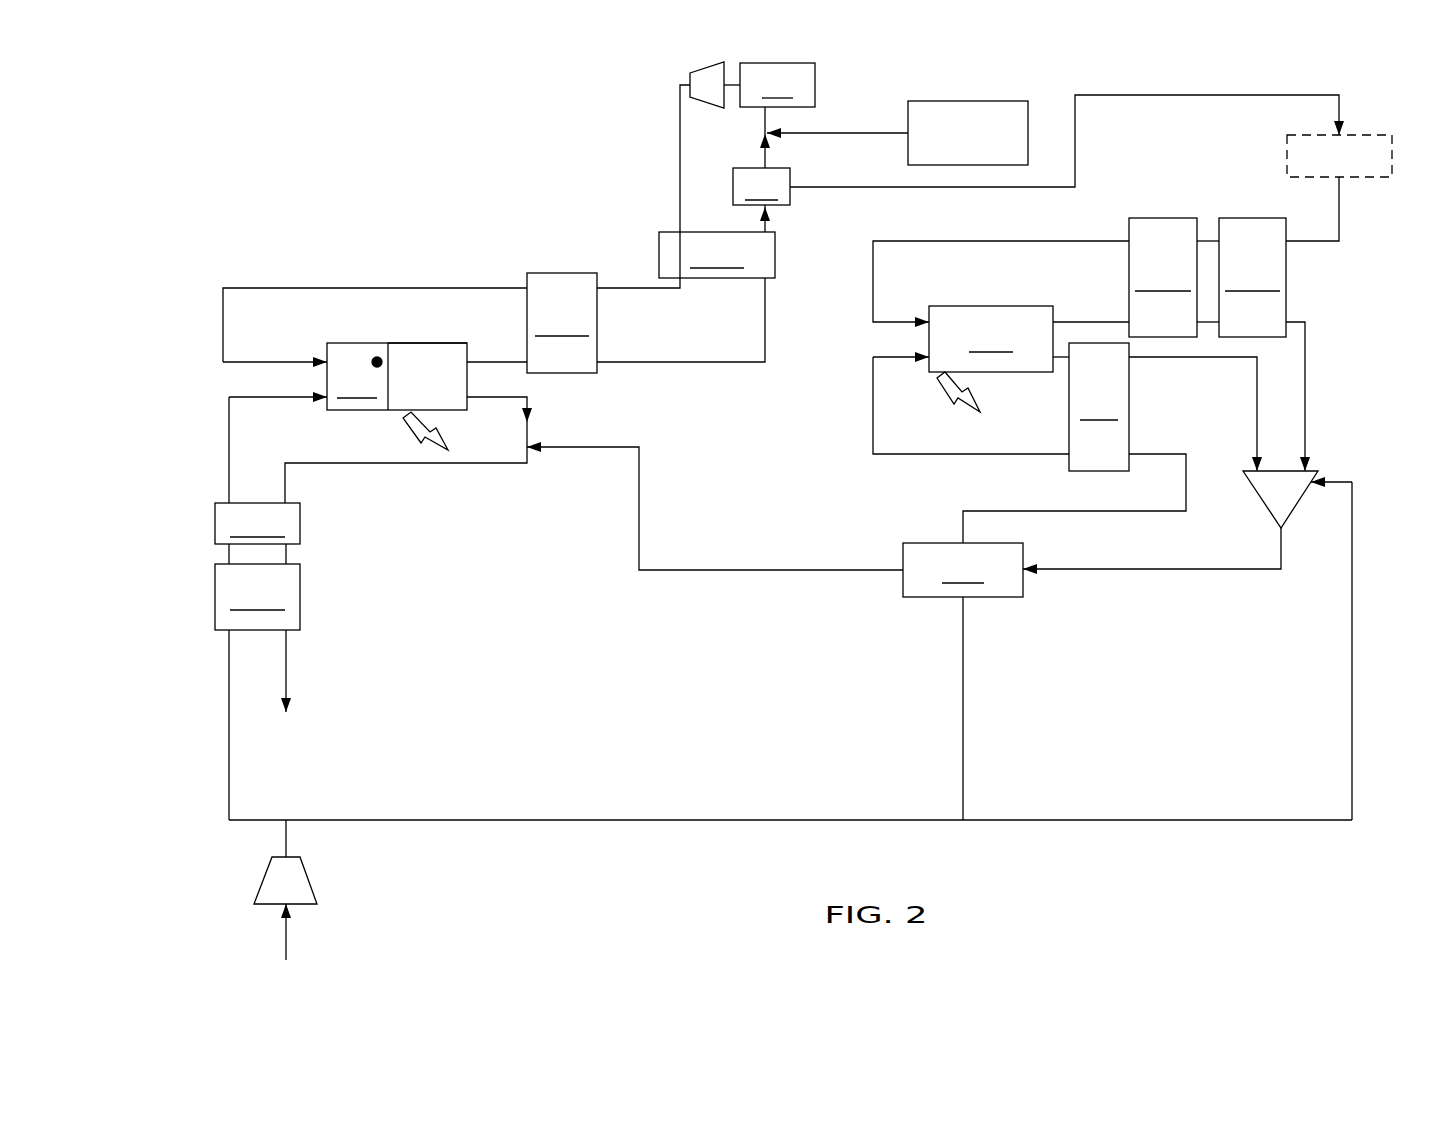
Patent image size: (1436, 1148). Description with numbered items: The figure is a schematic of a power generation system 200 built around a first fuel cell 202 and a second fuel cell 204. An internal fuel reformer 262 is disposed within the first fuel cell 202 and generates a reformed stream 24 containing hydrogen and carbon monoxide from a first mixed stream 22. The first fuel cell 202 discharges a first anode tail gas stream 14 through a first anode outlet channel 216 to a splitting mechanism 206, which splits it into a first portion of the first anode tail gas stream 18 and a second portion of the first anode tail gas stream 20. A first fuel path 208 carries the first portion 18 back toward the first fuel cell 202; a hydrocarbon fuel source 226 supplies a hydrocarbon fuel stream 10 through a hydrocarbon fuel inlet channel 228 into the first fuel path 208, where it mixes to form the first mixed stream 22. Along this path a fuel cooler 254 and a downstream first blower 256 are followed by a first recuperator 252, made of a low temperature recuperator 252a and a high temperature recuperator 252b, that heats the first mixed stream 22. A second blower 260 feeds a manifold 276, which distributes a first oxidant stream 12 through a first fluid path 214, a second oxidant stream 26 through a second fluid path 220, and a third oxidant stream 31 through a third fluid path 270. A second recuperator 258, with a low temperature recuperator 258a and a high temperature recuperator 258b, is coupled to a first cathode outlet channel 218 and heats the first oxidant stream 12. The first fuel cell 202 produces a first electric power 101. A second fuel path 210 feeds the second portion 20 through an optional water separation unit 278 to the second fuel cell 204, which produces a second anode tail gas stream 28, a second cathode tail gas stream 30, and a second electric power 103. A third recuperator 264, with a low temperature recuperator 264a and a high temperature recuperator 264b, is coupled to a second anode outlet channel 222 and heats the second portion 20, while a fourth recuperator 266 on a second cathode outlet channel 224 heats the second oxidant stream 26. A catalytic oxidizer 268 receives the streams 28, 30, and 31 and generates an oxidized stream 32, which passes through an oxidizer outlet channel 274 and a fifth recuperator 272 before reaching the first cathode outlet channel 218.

The power generation system 200 is at (296, 140).
The hydrocarbon fuel stream 10 is at (775, 130).
The first oxidant stream 12 is at (320, 400).
The first anode tail gas stream 14 is at (770, 210).
The first portion of the first anode tail gas stream 18 is at (762, 150).
The second portion of the first anode tail gas stream 20 is at (922, 320).
The first mixed stream 22 is at (320, 358).
The reformed stream 24 is at (372, 356).
The second oxidant stream 26 is at (922, 360).
The second anode tail gas stream 28 is at (1310, 463).
The second cathode tail gas stream 30 is at (1250, 463).
The third oxidant stream 31 is at (1318, 488).
The oxidized stream 32 is at (1030, 575).
The first electric power 101 is at (450, 437).
The second electric power 103 is at (980, 400).
The first fuel cell 202 is at (398, 343).
The second fuel cell 204 is at (991, 339).
The splitting mechanism 206 is at (761, 186).
The first fuel path 208 is at (770, 142).
The second fuel path 210 is at (1172, 95).
The first fluid path 214 is at (229, 765).
The first anode outlet channel 216 is at (712, 362).
The first cathode outlet channel 218 is at (485, 465).
The second fluid path 220 is at (872, 405).
The second anode outlet channel 222 is at (1072, 320).
The second cathode outlet channel 224 is at (1193, 358).
The hydrocarbon fuel source 226 is at (968, 101).
The hydrocarbon fuel inlet channel 228 is at (868, 133).
The first recuperator 252 is at (643, 301).
The low temperature recuperator 252a is at (717, 255).
The high temperature recuperator 252b is at (562, 323).
The fuel cooler 254 is at (777, 85).
The first blower 256 is at (700, 65).
The second recuperator 258 is at (310, 607).
The low temperature recuperator 258a is at (257, 597).
The high temperature recuperator 258b is at (257, 523).
The second blower 260 is at (312, 880).
The internal fuel reformer 262 is at (397, 376).
The third recuperator 264 is at (1207, 241).
The low temperature recuperator 264a is at (1252, 277).
The high temperature recuperator 264b is at (1163, 277).
The fourth recuperator 266 is at (1099, 407).
The catalytic oxidizer 268 is at (1258, 500).
The third fluid path 270 is at (1352, 710).
The fifth recuperator 272 is at (963, 570).
The oxidizer outlet channel 274 is at (770, 575).
The manifold 276 is at (612, 820).
The water separation unit 278 is at (1370, 135).